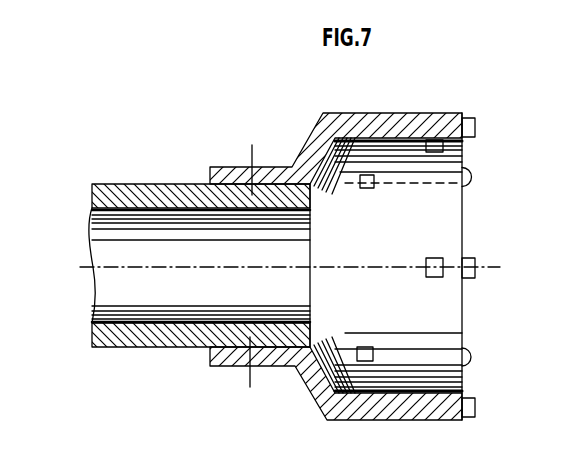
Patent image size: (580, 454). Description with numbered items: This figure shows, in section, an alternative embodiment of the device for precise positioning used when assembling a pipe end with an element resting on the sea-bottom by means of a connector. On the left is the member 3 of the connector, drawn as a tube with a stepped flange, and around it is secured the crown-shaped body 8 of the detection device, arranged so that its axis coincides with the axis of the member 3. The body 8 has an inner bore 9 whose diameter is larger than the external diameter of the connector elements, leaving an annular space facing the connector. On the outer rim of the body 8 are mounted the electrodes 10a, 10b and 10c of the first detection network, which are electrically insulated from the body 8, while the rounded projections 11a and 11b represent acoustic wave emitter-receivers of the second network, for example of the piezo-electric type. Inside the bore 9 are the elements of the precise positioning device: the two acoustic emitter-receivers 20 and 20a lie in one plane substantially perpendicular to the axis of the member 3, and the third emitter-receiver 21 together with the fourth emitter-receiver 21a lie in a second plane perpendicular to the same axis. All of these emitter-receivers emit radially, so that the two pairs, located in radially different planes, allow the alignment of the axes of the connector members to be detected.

The member of the connector 3 is at (134, 188).
The body 8 is at (312, 148).
The inner bore 9 is at (355, 390).
The electrode 10a is at (475, 122).
The electrode 10b is at (475, 267).
The electrode 10c is at (475, 410).
The acoustic wave emitter-receiver 11a is at (472, 177).
The acoustic wave emitter-receiver 11b is at (471, 357).
The acoustic emitter-receiver 20 is at (443, 148).
The acoustic emitter-receiver 20a is at (436, 258).
The third emitter-receiver 21 is at (360, 181).
The fourth emitter-receiver 21a is at (357, 348).